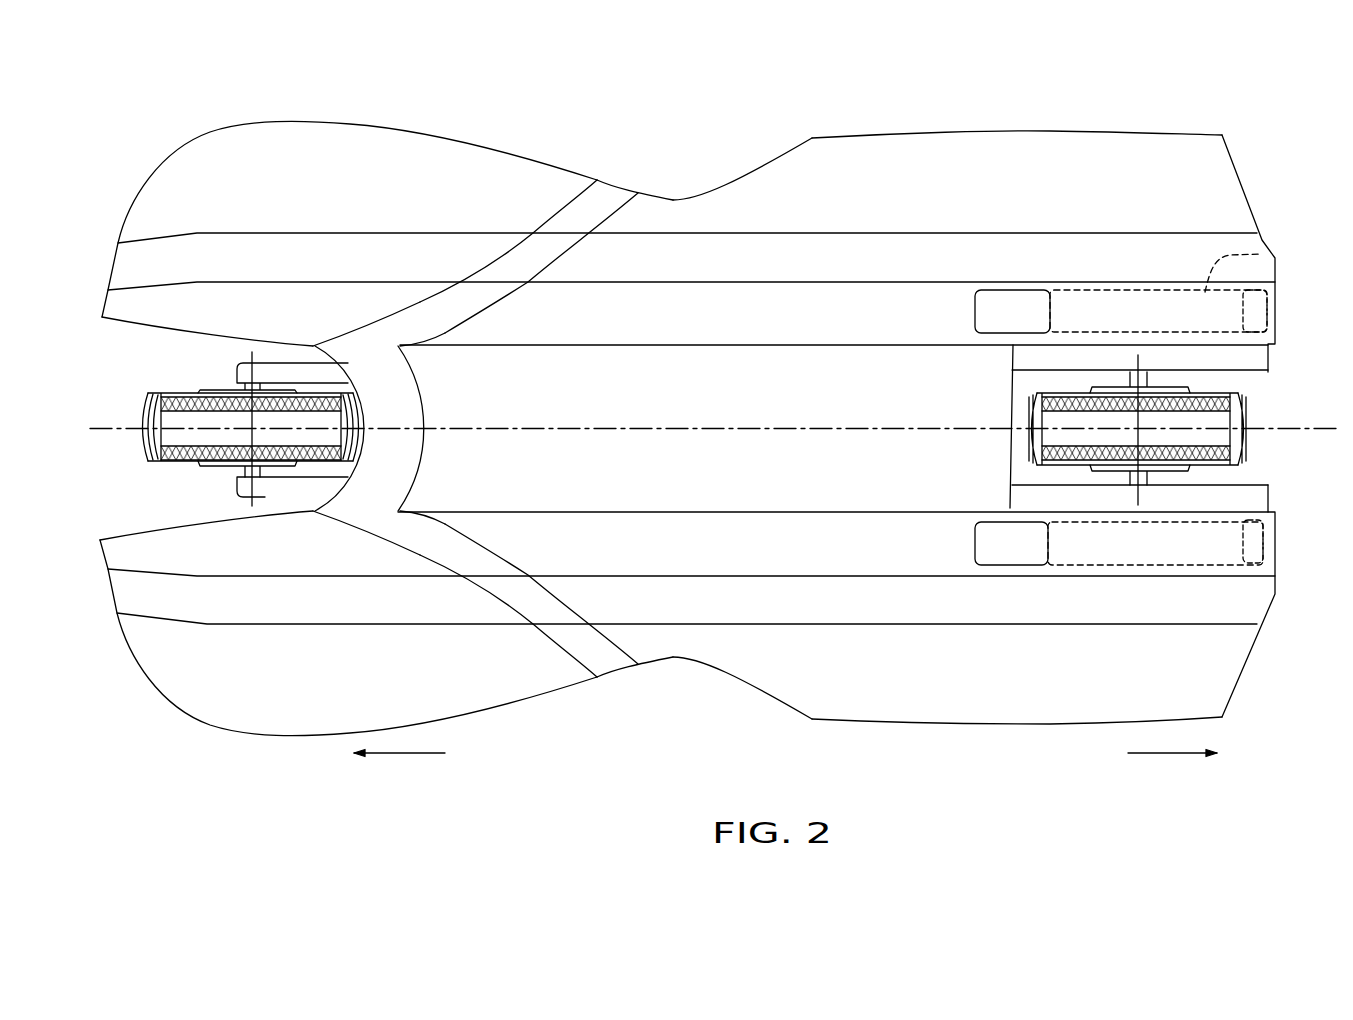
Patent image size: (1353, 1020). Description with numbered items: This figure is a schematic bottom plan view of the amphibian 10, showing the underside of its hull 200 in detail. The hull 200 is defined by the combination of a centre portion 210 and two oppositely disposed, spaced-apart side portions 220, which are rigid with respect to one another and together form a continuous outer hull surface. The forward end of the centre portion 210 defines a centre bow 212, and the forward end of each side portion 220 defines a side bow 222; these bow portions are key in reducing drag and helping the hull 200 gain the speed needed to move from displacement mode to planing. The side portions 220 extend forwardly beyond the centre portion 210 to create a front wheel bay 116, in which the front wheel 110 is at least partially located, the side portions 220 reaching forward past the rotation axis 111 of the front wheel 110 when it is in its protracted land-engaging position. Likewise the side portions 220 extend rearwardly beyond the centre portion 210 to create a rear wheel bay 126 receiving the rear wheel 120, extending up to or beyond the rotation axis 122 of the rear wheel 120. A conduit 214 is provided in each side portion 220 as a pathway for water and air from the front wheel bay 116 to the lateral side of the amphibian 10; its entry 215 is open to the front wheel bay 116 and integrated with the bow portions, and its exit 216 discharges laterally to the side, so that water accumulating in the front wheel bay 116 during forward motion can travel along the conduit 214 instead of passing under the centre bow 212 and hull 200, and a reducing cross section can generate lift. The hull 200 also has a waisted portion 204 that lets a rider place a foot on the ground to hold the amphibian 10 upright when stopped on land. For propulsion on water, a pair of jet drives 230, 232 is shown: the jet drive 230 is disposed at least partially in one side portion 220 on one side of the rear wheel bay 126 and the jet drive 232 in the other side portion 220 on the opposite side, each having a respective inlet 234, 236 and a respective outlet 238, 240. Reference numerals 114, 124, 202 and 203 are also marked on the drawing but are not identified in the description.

The amphibian 10 is at (623, 133).
The front wheel 110 is at (219, 462).
The rotation axis of the front wheel 111 is at (258, 497).
The front wheel 114 is at (142, 418).
The front wheel bay 116 is at (278, 422).
The rear wheel 120 is at (1173, 430).
The rotation axis of the rear wheel 122 is at (1135, 500).
The rear wheel tread 124 is at (1250, 443).
The rear wheel bay 126 is at (1153, 426).
The hull 200 is at (1060, 132).
The top surface 202 is at (913, 132).
The longitudinal axis 203 is at (858, 427).
The waisted portion 204 is at (728, 138).
The centre portion 210 is at (710, 472).
The centre bow 212 is at (397, 400).
The conduit 214 is at (452, 312).
The entry 215 is at (378, 358).
The exit 216 is at (625, 177).
The side portions 220 is at (723, 406).
The side bow 222 is at (122, 265).
The jet drive 230 is at (1262, 255).
The jet drive 232 is at (1130, 565).
The inlet 234 is at (1000, 300).
The inlet 236 is at (1005, 548).
The outlet 238 is at (1257, 310).
The outlet 240 is at (1252, 537).